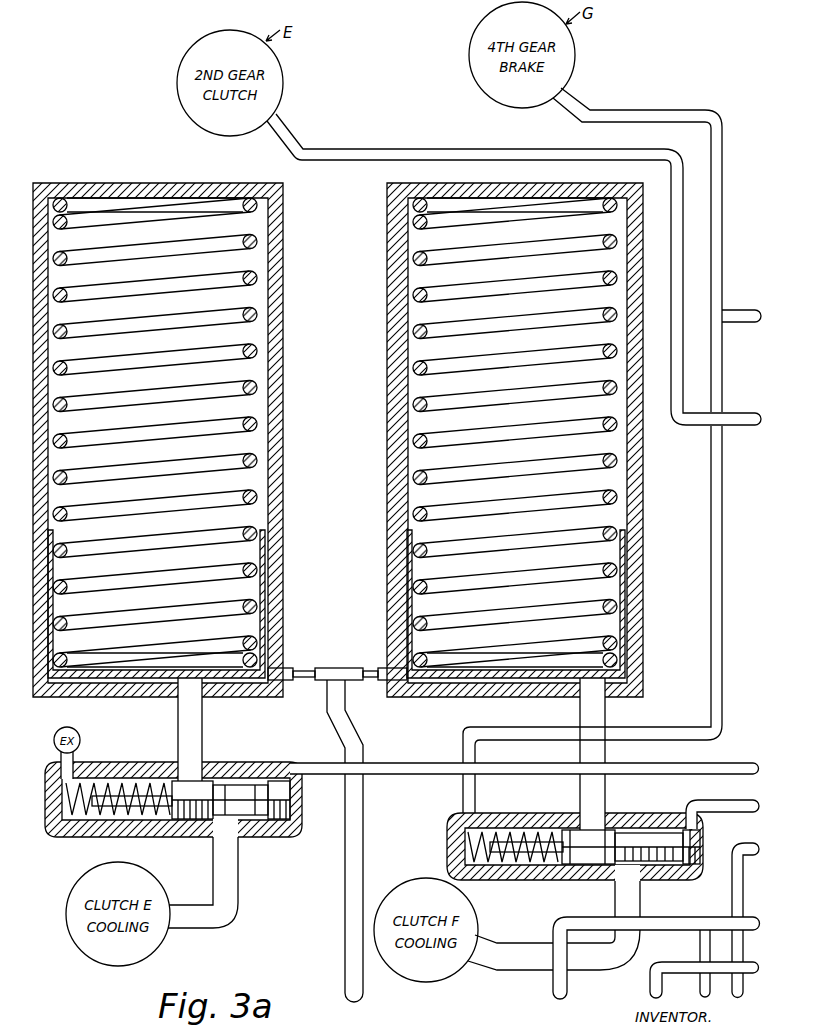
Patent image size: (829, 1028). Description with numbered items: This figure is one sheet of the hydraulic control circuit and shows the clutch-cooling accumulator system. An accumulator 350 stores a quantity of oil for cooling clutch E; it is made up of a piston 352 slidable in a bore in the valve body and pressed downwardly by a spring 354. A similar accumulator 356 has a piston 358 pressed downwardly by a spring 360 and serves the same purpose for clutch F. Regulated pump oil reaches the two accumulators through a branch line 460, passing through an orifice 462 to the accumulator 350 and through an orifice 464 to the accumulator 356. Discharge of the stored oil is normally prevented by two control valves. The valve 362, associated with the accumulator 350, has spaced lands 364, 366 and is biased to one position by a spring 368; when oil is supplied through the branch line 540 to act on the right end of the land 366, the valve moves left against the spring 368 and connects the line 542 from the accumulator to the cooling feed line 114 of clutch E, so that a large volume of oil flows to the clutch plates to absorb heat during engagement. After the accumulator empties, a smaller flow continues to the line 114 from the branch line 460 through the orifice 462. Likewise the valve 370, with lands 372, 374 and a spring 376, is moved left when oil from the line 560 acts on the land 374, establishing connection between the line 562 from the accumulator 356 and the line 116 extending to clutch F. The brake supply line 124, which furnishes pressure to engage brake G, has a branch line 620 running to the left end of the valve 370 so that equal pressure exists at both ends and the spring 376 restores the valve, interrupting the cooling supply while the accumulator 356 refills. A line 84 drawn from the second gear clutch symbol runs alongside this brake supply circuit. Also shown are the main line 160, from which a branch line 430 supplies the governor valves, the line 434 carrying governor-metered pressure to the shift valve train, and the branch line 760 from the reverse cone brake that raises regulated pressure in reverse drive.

The 2nd gear clutch pressure line 84 is at (284, 136).
The brake supply line 124 is at (737, 310).
The branch line 620 is at (722, 356).
The accumulator 350 is at (284, 488).
The piston 352 is at (264, 590).
The spring 354 is at (257, 388).
The accumulator 356 is at (644, 498).
The piston 358 is at (626, 612).
The spring 360 is at (618, 428).
The orifice 462 is at (302, 668).
The orifice 464 is at (370, 670).
The branch line 460 is at (350, 972).
The line 542 is at (202, 716).
The line 562 is at (597, 717).
The branch line 540 is at (728, 763).
The spring 368 is at (103, 782).
The land 364 is at (190, 815).
The cooling accumulator control valve 362 is at (245, 786).
The land 366 is at (275, 815).
The cooling feed line 114 is at (203, 917).
The spring 376 is at (494, 830).
The land 372 is at (590, 838).
The accumulator control valve 370 is at (628, 834).
The land 374 is at (677, 830).
The line 560 is at (703, 806).
The line 116 is at (505, 950).
The main line 160 is at (721, 917).
The branch line 760 is at (688, 961).
The branch line 430 is at (700, 987).
The line 434 is at (752, 846).